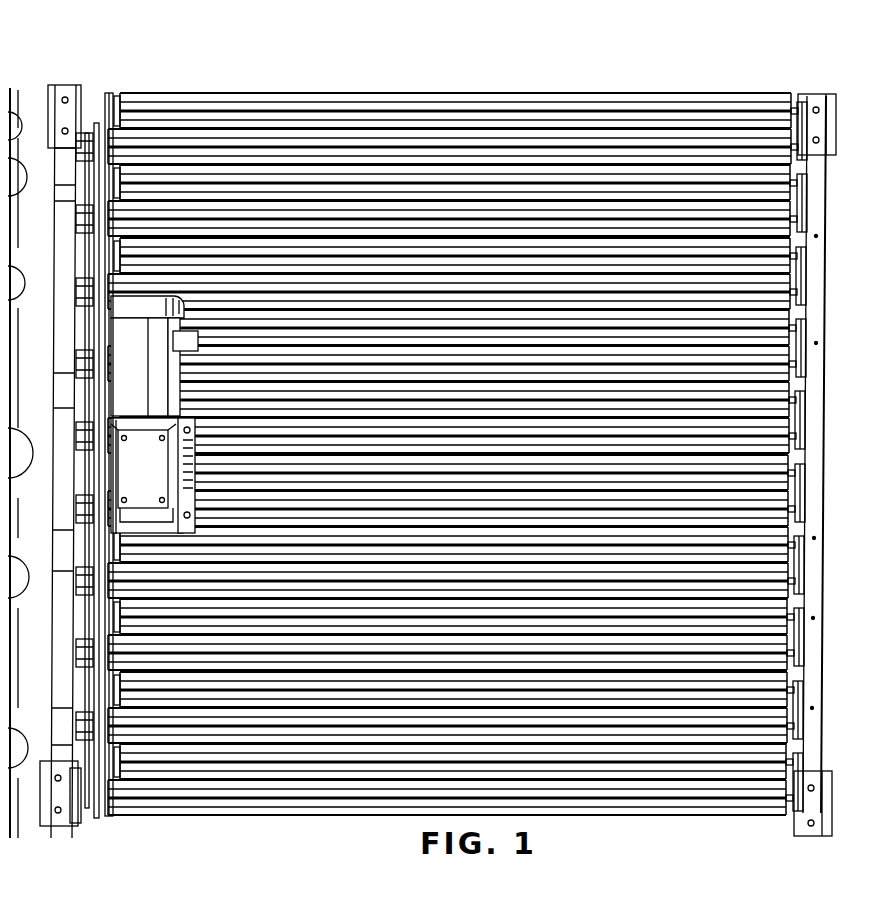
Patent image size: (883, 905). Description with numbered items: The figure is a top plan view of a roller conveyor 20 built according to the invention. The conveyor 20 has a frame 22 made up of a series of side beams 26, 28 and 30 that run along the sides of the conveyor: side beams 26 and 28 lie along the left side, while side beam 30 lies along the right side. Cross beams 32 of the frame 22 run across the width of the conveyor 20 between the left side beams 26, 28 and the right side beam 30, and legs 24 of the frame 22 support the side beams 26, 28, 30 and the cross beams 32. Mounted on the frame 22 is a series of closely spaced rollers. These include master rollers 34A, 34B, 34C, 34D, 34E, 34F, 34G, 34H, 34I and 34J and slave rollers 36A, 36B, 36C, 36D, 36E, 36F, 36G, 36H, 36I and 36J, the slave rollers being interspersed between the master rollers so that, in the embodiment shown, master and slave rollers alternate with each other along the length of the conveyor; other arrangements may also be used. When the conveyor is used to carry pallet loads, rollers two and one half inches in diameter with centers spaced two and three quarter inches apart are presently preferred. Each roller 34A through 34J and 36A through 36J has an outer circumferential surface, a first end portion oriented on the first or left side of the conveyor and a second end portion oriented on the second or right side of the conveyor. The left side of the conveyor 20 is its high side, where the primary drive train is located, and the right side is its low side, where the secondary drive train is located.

The conveyor 20 is at (565, 80).
The frame 22 is at (90, 93).
The legs 24 is at (38, 101).
The side beam 26 is at (56, 812).
The side beam 28 is at (117, 88).
The side beam 30 is at (804, 90).
The cross beams 32 is at (810, 199).
The master roller 34A is at (268, 793).
The master roller 34B is at (374, 723).
The master roller 34C is at (264, 652).
The master roller 34D is at (370, 582).
The master roller 34E is at (266, 506).
The master roller 34F is at (374, 434).
The master roller 34G is at (266, 363).
The master roller 34H is at (376, 293).
The master roller 34I is at (266, 220).
The master roller 34J is at (363, 153).
The slave roller 36A is at (268, 757).
The slave roller 36B is at (376, 688).
The slave roller 36C is at (266, 618).
The slave roller 36D is at (370, 548).
The slave roller 36E is at (266, 473).
The slave roller 36F is at (376, 401).
The slave roller 36G is at (268, 330).
The slave roller 36H is at (376, 257).
The slave roller 36I is at (266, 187).
The slave roller 36J is at (363, 114).